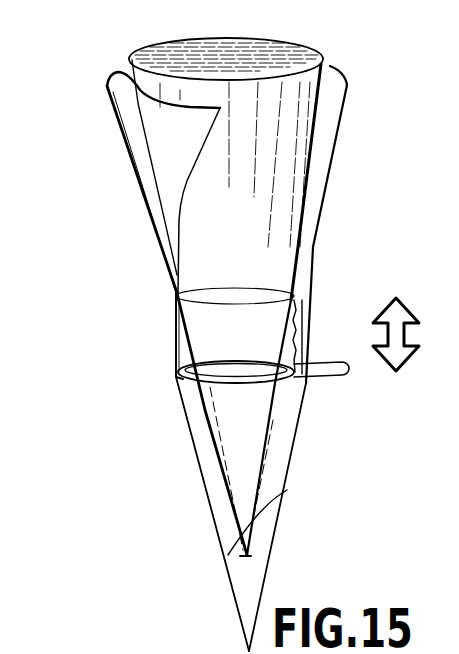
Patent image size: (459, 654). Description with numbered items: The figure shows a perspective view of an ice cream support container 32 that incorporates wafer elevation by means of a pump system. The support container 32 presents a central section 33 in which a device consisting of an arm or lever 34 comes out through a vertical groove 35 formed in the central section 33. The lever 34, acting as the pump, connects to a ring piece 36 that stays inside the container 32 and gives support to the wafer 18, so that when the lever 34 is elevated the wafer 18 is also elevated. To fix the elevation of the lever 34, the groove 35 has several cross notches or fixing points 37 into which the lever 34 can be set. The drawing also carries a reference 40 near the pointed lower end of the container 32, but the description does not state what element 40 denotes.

The wafer 18 is at (143, 48).
The support container 32 is at (138, 165).
The central section 33 is at (173, 320).
The arm or lever 34 is at (331, 381).
The vertical groove 35 is at (306, 364).
The ring piece 36 is at (203, 384).
The cross notches or fixing points 37 is at (303, 347).
The pointed tip 40 is at (158, 520).